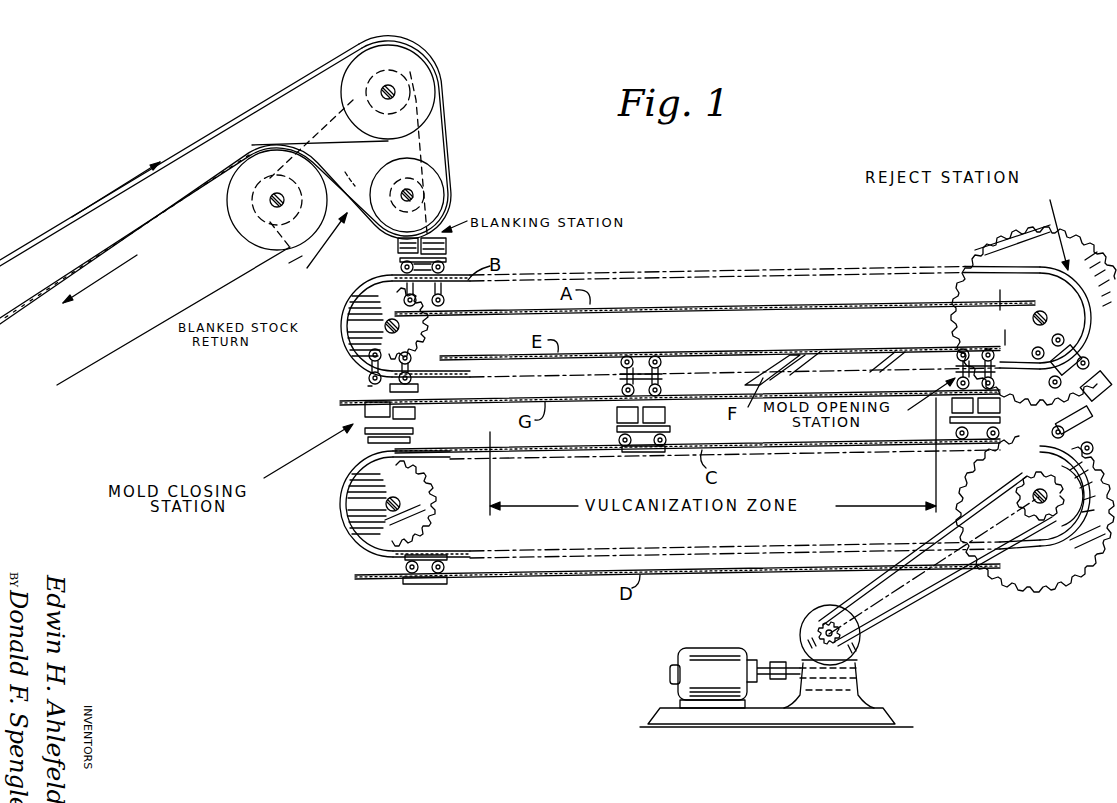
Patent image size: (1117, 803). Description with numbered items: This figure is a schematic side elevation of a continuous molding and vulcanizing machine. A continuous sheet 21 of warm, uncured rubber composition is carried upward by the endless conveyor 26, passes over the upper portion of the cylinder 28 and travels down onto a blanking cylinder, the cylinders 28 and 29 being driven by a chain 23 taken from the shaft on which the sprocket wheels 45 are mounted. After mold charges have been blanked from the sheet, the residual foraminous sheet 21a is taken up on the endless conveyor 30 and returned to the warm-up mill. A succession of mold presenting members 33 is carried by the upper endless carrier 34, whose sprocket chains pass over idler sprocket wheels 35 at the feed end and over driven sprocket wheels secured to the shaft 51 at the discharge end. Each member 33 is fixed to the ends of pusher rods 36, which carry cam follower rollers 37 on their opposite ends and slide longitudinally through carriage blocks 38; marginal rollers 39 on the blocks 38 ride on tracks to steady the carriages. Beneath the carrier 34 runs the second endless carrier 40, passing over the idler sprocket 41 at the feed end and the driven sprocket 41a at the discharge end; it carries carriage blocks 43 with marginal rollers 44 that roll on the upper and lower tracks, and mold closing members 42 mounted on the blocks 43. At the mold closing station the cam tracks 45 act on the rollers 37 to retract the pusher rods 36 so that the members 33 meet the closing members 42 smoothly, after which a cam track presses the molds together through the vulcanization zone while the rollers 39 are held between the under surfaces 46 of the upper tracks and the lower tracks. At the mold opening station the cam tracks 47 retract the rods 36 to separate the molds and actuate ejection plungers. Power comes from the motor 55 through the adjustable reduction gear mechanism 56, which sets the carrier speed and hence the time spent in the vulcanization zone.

The continuous sheet 21 is at (449, 139).
The residual sheet material 21a is at (343, 186).
The chain 23 is at (288, 266).
The endless conveyor 26 is at (170, 136).
The cylinder 28 is at (428, 77).
The cylinder 29 is at (232, 220).
The endless conveyor 30 is at (106, 353).
The mold presenting members 33 is at (447, 246).
The upper endless carrier 34 is at (725, 266).
The idler sprocket wheels 35 is at (444, 336).
The pusher rods 36 is at (448, 298).
The cam follower rollers 37 is at (406, 357).
The carriage blocks 38 is at (412, 396).
The marginal rollers 39 is at (401, 265).
The second endless carrier 40 is at (752, 546).
The idler sprocket 41 is at (362, 538).
The driven sprocket 41a is at (1000, 481).
The mold closing members 42 is at (672, 426).
The carriage blocks 43 is at (414, 440).
The marginal rollers 44 is at (618, 440).
The cam tracks 45 is at (358, 330).
The under surfaces 46 is at (846, 378).
The cam tracks 47 is at (1074, 308).
The shaft 51 is at (1032, 319).
The motor 55 is at (698, 650).
The reduction gear mechanism 56 is at (858, 686).